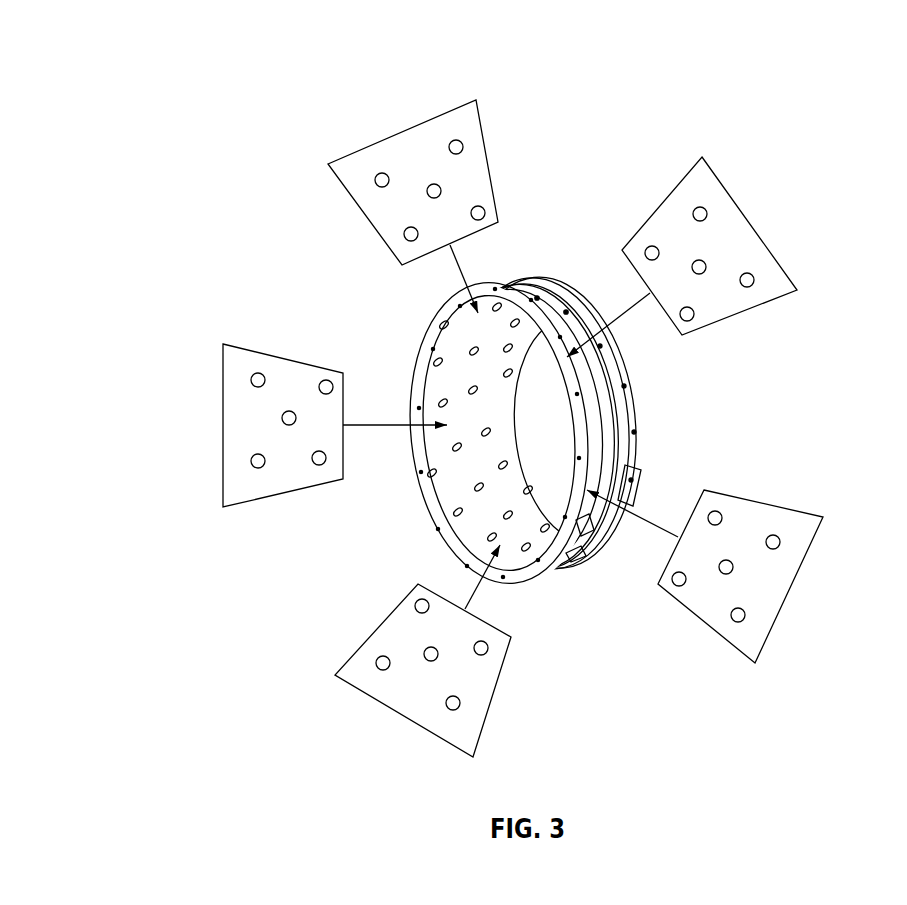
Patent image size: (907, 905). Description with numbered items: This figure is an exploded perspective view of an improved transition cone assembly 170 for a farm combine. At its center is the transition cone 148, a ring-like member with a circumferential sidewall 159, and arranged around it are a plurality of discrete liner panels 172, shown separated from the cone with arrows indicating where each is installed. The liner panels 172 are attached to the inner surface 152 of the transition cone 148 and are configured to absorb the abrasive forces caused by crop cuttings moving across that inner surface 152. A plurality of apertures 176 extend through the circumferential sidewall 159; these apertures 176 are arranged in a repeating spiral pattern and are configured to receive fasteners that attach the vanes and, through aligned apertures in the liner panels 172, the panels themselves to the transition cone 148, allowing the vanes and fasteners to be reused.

The improved transition cone assembly 170 is at (92, 54).
The transition cone 148 is at (510, 284).
The inner surface 152 is at (442, 448).
The circumferential sidewall 159 is at (602, 428).
The liner panels 172 is at (461, 97).
The apertures 176 is at (436, 361).